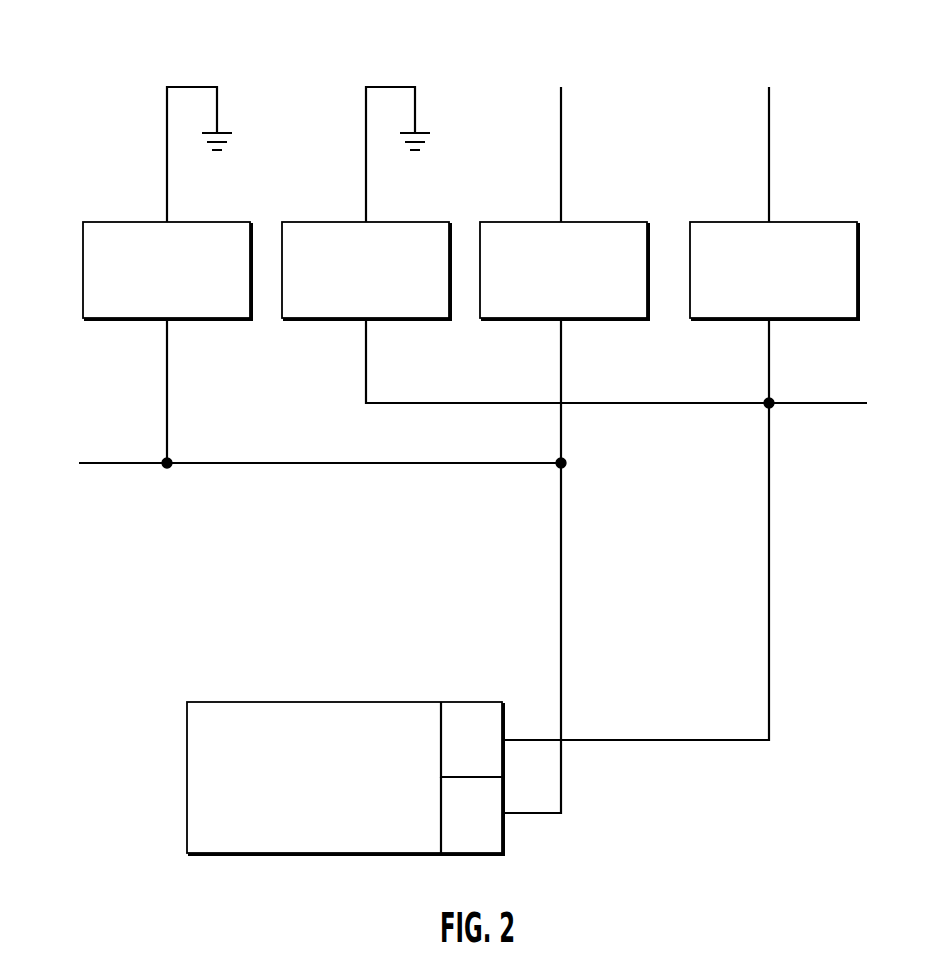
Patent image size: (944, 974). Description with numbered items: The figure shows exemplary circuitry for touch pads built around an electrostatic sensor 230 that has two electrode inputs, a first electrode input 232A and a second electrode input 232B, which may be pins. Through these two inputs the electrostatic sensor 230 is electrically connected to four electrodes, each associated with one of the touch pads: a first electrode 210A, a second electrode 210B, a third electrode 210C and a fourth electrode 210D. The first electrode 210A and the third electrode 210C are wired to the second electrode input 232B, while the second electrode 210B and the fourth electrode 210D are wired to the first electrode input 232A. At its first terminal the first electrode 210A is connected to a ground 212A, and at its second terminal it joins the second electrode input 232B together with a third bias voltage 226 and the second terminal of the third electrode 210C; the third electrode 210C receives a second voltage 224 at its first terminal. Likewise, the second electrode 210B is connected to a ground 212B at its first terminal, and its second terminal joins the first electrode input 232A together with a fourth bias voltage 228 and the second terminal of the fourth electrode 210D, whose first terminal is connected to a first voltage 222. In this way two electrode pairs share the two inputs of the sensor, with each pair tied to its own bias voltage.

The first electrode 210A is at (188, 298).
The second electrode 210B is at (388, 298).
The third electrode 210C is at (586, 298).
The fourth electrode 210D is at (796, 298).
The ground 212A is at (225, 154).
The ground 212B is at (424, 154).
The first voltage V1 222 is at (785, 73).
The second voltage V2 224 is at (578, 73).
The bias voltage V3 226 is at (53, 490).
The bias voltage V4 228 is at (903, 437).
The electrostatic sensor 230 is at (347, 815).
The first electrode input 232A is at (495, 753).
The second electrode input 232B is at (495, 826).